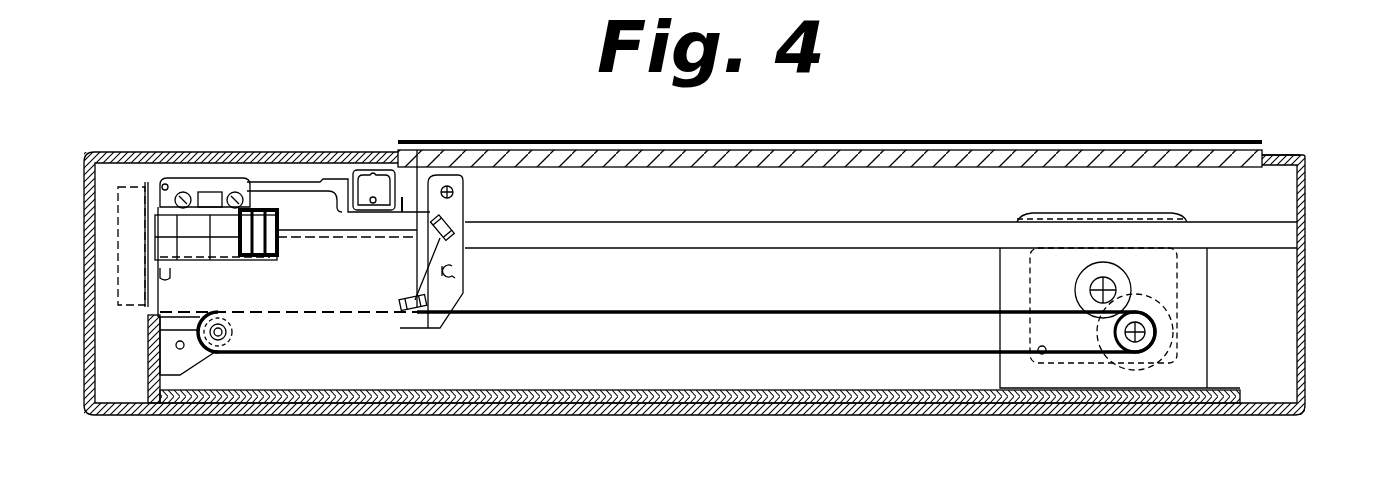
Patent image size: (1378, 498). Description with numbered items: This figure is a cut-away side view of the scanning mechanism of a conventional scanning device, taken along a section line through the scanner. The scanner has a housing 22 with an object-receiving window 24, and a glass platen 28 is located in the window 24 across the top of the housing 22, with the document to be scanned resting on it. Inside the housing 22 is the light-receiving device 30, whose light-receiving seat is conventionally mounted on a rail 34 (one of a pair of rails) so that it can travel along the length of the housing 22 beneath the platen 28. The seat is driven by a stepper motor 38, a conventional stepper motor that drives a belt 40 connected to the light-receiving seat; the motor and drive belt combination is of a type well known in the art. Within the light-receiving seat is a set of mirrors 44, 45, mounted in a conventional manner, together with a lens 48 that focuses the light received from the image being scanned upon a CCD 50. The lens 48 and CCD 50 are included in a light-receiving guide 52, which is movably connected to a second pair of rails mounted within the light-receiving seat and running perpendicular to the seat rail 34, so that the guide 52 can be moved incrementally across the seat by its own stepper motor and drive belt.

The housing 22 is at (1306, 309).
The object-receiving window 24 is at (1257, 155).
The glass platen 28 is at (398, 152).
The light-receiving device 30 is at (472, 272).
The rail 34 is at (743, 222).
The stepper motor 38 is at (1177, 270).
The belt 40 is at (767, 310).
The mirror 44 is at (440, 228).
The mirror 45 is at (408, 298).
The lens 48 is at (282, 246).
The CCD 50 is at (130, 305).
The light-receiving guide 52 is at (203, 265).